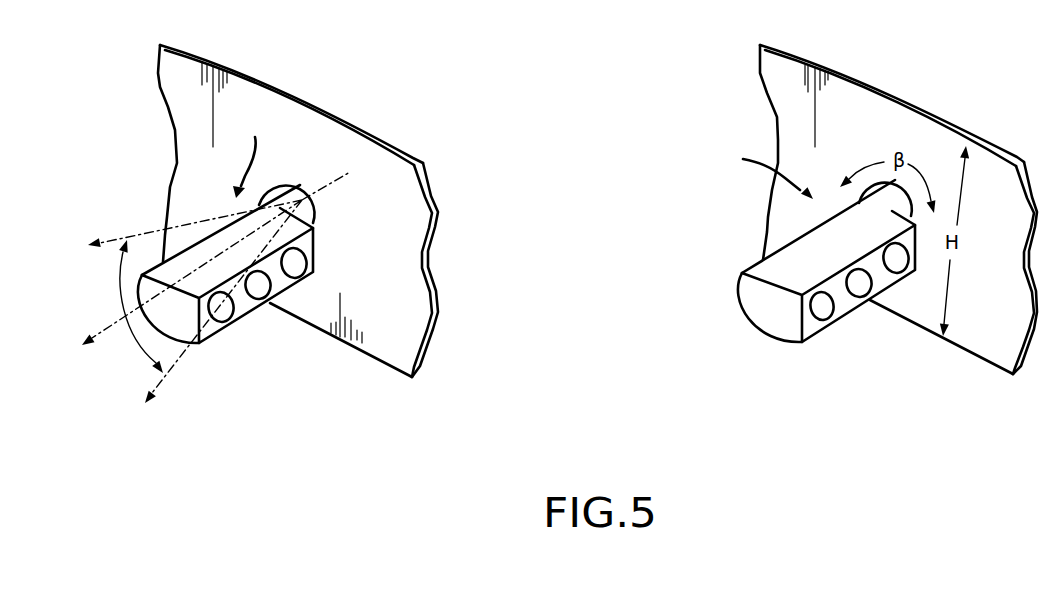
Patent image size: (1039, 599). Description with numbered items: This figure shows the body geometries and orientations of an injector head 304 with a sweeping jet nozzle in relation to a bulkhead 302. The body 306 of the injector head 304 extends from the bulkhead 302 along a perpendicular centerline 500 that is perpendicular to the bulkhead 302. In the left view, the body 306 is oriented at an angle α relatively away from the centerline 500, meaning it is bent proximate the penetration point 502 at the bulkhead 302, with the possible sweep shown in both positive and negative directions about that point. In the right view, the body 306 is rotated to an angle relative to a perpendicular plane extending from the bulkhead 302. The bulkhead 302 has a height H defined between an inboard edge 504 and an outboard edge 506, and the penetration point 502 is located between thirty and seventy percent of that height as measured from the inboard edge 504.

The bulkhead 302 is at (382, 180).
The injector head 304 is at (523, 153).
The body 306 is at (190, 244).
The perpendicular centerline 500 is at (118, 319).
The penetration point 502 is at (318, 214).
The inboard edge 504 is at (983, 359).
The outboard edge 506 is at (873, 82).